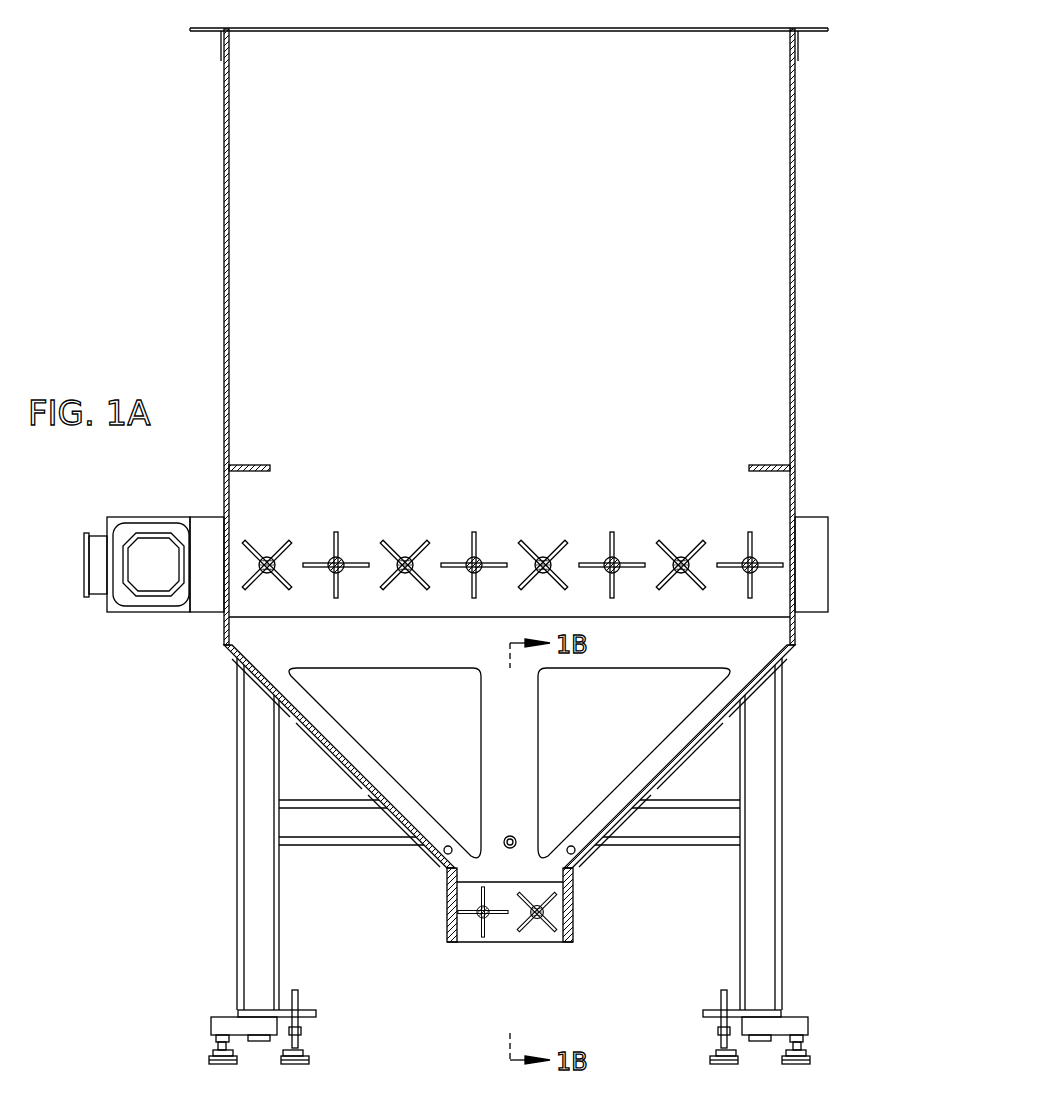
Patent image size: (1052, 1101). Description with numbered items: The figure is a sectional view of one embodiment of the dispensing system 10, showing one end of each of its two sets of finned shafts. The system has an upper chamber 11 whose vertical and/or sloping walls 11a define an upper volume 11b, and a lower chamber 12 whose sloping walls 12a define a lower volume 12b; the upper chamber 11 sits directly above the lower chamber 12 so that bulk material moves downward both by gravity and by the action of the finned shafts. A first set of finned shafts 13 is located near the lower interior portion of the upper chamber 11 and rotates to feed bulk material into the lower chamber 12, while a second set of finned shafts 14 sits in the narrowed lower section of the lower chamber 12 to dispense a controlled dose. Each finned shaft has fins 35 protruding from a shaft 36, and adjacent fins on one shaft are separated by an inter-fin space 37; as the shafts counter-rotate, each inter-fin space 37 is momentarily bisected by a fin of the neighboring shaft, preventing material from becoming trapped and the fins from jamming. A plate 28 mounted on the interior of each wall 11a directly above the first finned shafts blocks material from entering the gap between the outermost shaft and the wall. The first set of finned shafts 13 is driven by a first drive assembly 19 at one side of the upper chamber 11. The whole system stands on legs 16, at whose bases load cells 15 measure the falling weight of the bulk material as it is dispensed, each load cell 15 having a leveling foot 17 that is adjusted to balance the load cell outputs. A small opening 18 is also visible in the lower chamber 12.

The dispensing system 10 is at (157, 46).
The upper chamber 11 is at (818, 208).
The walls 11a is at (224, 279).
The upper volume 11b is at (716, 132).
The lower chamber 12 is at (516, 753).
The walls 12a is at (330, 752).
The lower volume 12b is at (670, 680).
The first set of finned shafts 13 is at (545, 541).
The second set of finned shafts 14 is at (562, 912).
The load cells 15 is at (217, 1022).
The legs 16 is at (262, 878).
The leveling foot 17 is at (222, 1064).
The sensor opening 18 is at (510, 835).
The first drive assembly 19 is at (150, 628).
The plate 28 is at (268, 465).
The fins 35 is at (336, 545).
The shaft 36 is at (543, 543).
The inter-fin space 37 is at (438, 552).